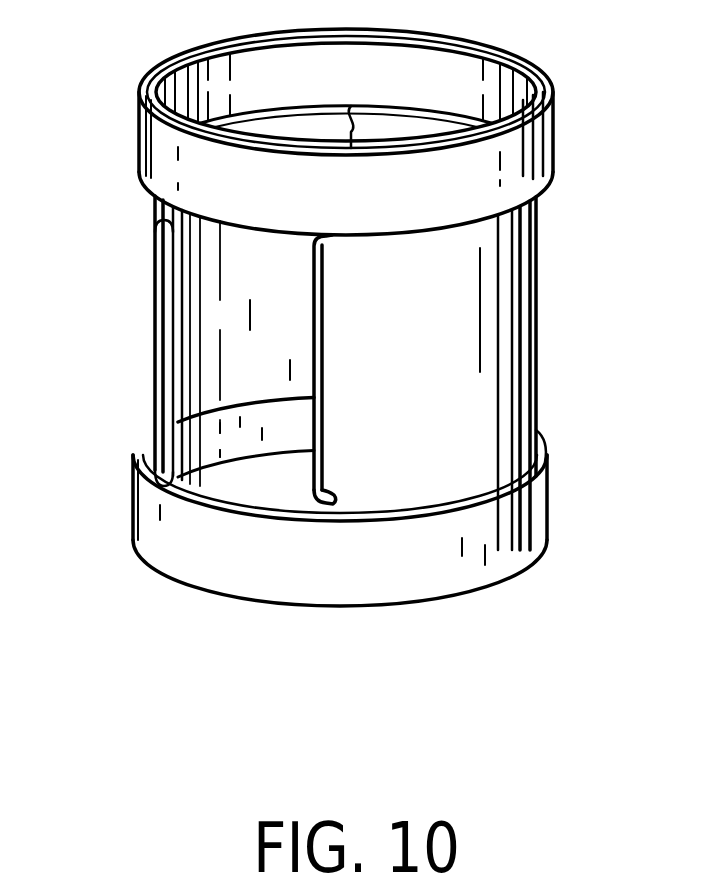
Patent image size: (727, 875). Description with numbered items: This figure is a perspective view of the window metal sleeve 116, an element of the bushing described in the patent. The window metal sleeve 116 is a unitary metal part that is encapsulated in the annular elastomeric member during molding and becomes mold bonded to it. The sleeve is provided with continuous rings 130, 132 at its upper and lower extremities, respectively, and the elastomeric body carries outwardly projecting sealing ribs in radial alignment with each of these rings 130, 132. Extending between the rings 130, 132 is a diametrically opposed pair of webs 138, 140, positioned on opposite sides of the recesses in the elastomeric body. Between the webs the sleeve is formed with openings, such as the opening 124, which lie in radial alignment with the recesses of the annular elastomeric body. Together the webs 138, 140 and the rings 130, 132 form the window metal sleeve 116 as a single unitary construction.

The window metal sleeve 116 is at (163, 158).
The continuous ring 130 is at (555, 145).
The opening 124 is at (220, 347).
The web 140 is at (157, 278).
The continuous ring 132 is at (515, 518).
The web 138 is at (453, 470).